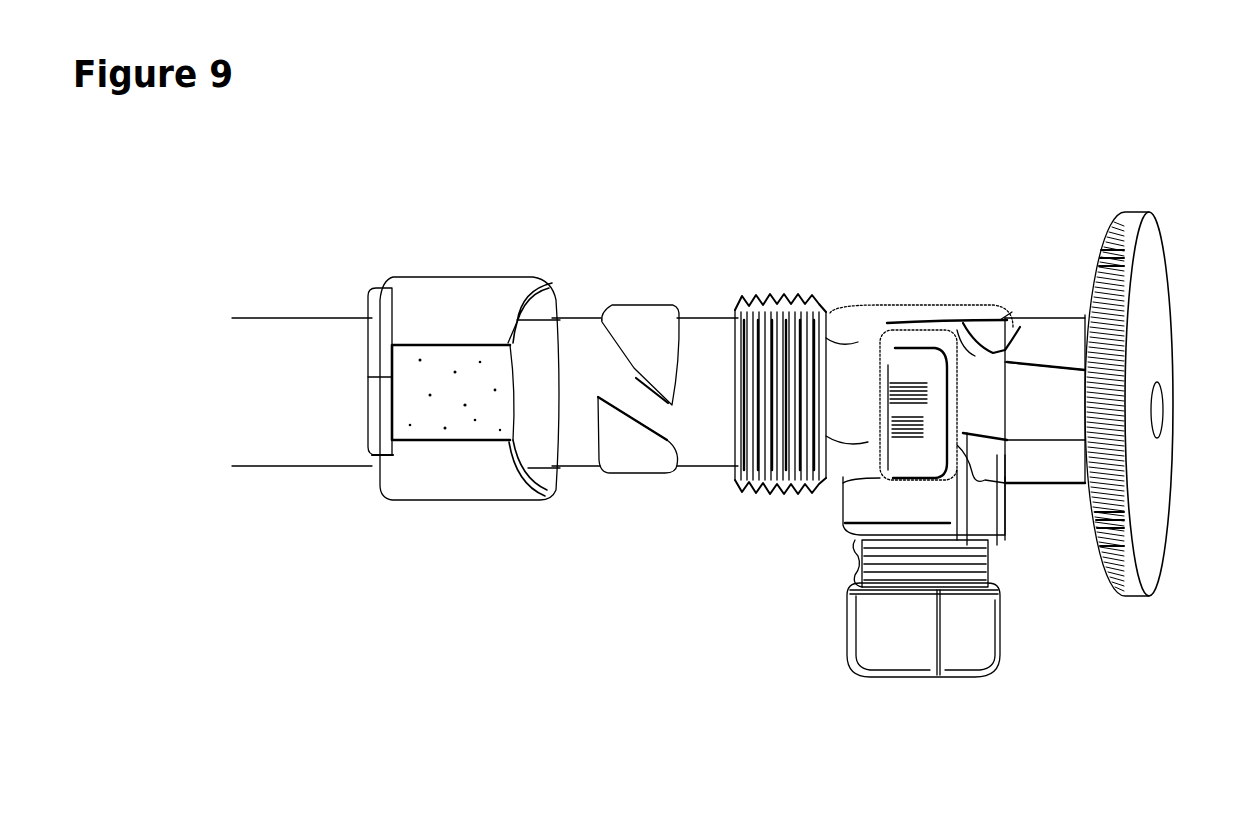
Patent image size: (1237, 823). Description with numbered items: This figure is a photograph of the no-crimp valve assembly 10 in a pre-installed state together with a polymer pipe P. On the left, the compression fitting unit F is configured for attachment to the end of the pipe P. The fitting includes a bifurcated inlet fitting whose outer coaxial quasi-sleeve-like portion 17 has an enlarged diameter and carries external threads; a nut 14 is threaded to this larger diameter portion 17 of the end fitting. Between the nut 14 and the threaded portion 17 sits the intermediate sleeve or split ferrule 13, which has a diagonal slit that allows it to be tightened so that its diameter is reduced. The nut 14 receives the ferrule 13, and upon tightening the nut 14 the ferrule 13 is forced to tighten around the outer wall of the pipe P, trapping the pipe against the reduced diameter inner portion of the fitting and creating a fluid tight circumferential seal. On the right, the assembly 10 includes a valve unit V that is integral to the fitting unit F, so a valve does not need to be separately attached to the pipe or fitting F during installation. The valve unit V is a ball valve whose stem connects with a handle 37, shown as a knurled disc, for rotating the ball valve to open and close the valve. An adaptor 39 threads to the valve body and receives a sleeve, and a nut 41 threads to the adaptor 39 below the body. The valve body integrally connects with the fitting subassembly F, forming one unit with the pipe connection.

The valve assembly 10 is at (985, 176).
The pipe P is at (267, 319).
The nut 14 is at (444, 273).
The split ferrule 13 is at (633, 304).
The outer quasi-sleeve-like portion 17 is at (790, 291).
The valve unit V is at (1190, 724).
The compression fitting unit F is at (814, 726).
The handle 37 is at (1113, 215).
The adaptor 39 is at (866, 553).
The nut 41 is at (992, 625).